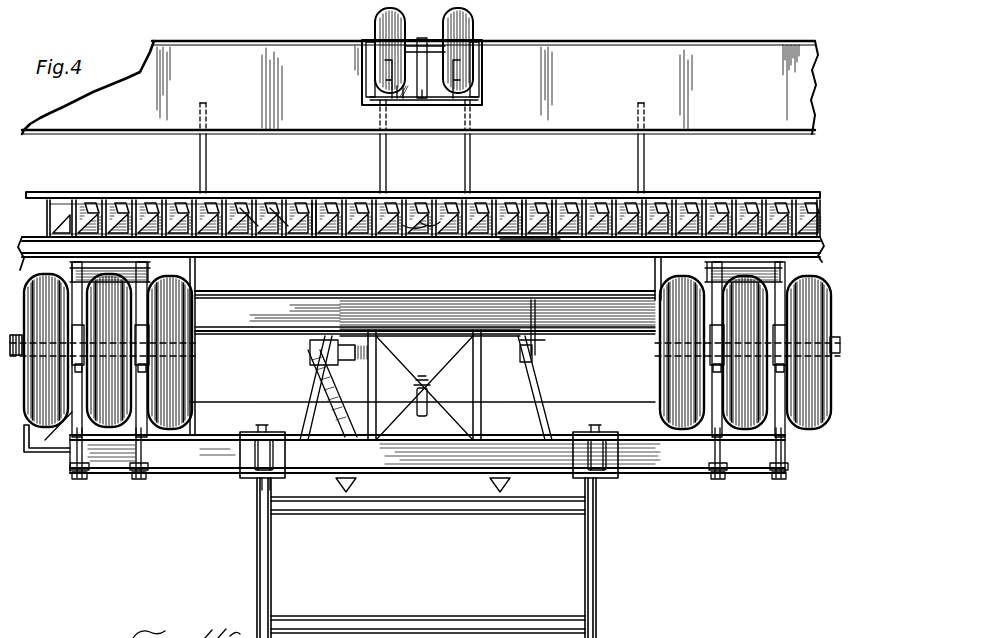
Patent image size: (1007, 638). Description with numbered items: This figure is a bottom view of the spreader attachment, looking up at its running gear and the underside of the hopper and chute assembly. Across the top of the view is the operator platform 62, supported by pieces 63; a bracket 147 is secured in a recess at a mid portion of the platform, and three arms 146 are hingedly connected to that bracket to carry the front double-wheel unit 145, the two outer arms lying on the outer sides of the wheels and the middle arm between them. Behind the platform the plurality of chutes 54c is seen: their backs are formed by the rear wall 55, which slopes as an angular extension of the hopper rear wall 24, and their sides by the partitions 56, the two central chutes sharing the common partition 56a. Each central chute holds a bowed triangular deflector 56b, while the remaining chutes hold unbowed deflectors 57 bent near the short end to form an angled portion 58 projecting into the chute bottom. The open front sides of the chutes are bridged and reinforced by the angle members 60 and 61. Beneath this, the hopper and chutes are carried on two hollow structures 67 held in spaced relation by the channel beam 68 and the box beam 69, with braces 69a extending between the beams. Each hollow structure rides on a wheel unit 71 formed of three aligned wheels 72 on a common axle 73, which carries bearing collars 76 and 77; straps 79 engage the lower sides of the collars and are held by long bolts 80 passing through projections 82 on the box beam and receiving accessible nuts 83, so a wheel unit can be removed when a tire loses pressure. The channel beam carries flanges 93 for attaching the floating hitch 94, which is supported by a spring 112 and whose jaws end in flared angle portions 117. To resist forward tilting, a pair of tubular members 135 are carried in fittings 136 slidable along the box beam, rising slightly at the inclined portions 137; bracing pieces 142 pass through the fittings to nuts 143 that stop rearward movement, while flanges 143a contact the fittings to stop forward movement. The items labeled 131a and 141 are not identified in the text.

The rear wall 24 is at (556, 386).
The chutes 54c is at (582, 212).
The rear wall 55 is at (526, 243).
The partitions 56 is at (303, 198).
The member 56a is at (436, 224).
The triangular deflector 56b is at (412, 224).
The triangular deflector 57 is at (308, 215).
The angled portion 58 is at (262, 215).
The angle member 60 is at (246, 198).
The angle member 61 is at (84, 196).
The platform 62 is at (252, 58).
The pieces 63 is at (200, 157).
The hollow structures 67 is at (50, 450).
The channel beam 68 is at (272, 312).
The box beam 69 is at (212, 458).
The braces 69a is at (478, 352).
The wheel unit 71 is at (190, 380).
The wheels 72 is at (110, 420).
The axle 73 is at (180, 354).
The bearing collar 76 is at (85, 345).
The bearing collar 77 is at (155, 355).
The strap 79 is at (148, 348).
The bolts 80 is at (75, 428).
The projections 82 is at (148, 472).
The nuts 83 is at (80, 480).
The flanges 93 is at (300, 348).
The floating hitch 94 is at (540, 378).
The spring 112 is at (418, 378).
The angle portions 117 is at (354, 482).
The link 131a is at (78, 430).
The tubular members 135 is at (271, 550).
The fittings 136 is at (248, 472).
The inclined portion 137 is at (272, 585).
The lower frame 141 is at (456, 558).
The bracing pieces 142 is at (260, 428).
The nuts 143 is at (272, 430).
The flanges 143a is at (270, 478).
The double-wheel unit 145 is at (427, 67).
The arms 146 is at (418, 42).
The bracket 147 is at (452, 98).